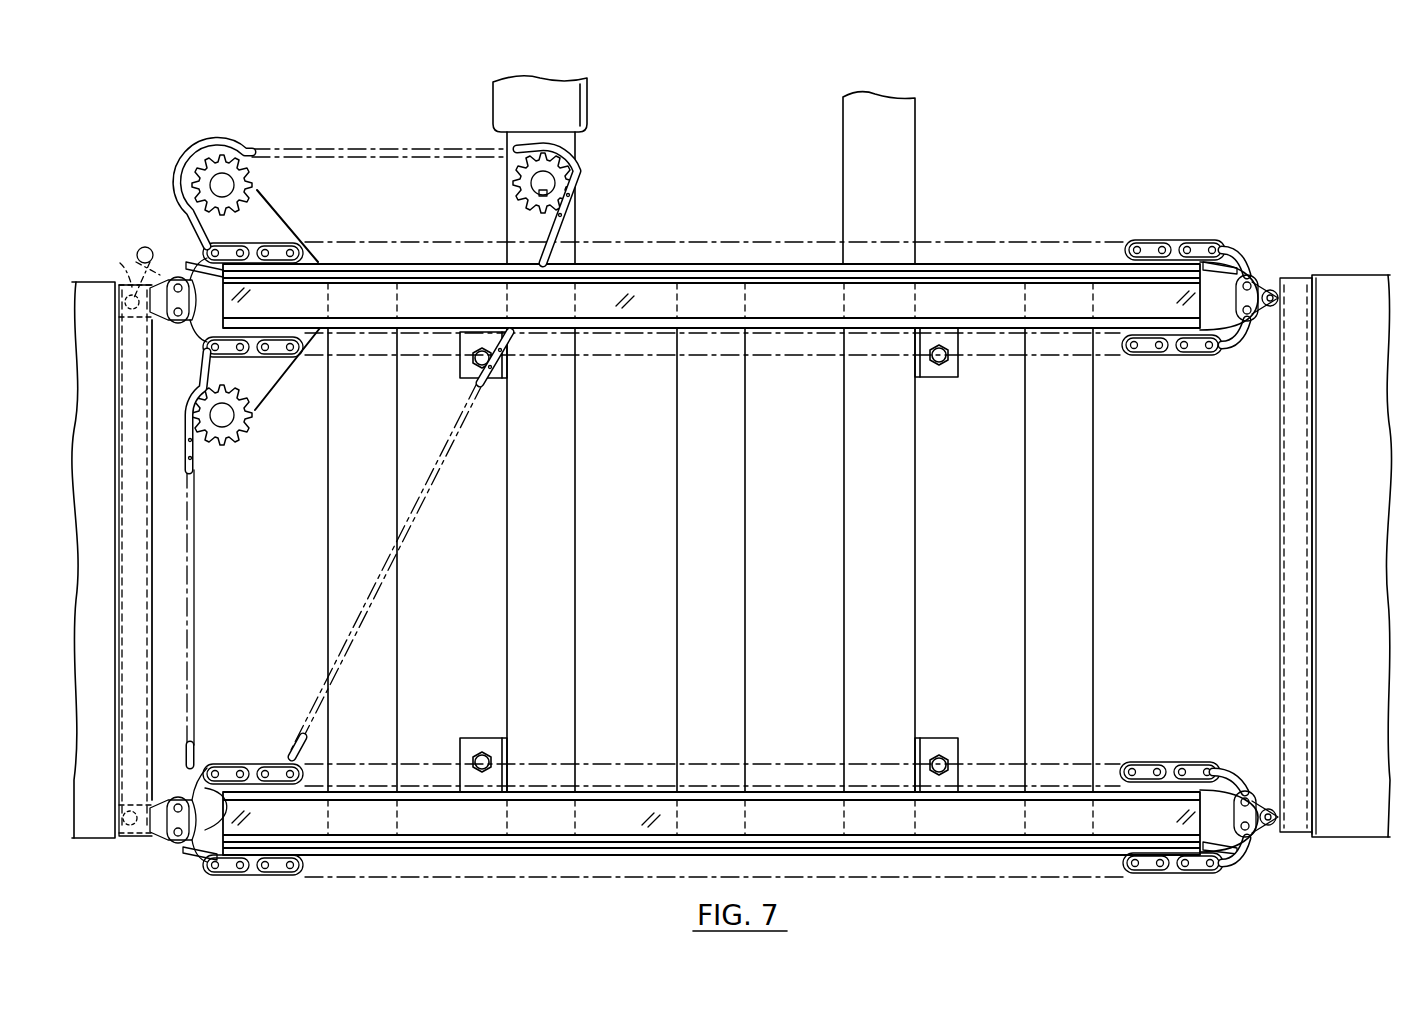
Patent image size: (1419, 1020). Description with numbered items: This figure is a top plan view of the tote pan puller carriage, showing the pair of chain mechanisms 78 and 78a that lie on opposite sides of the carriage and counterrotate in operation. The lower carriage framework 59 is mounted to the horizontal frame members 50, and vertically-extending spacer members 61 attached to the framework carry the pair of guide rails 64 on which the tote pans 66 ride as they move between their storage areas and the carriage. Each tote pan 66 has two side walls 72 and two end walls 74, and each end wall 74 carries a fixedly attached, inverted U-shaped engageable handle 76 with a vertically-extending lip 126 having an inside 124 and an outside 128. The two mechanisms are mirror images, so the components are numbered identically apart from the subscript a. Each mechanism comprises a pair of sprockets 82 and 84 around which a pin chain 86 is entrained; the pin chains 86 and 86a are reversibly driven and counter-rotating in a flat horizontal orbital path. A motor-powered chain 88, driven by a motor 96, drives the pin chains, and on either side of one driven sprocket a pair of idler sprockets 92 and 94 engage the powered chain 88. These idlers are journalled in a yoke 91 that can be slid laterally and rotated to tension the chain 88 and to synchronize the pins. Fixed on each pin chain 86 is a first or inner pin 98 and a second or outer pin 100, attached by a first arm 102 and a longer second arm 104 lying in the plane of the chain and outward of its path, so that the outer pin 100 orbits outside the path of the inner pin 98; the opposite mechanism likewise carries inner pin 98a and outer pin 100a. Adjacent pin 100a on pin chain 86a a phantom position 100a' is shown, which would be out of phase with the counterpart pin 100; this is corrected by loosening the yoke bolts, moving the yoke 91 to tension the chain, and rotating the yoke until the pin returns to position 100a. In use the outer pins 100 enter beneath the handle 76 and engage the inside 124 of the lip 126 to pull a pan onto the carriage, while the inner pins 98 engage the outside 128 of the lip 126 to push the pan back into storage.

The horizontal frame members 50 is at (580, 578).
The lower carriage framework 59 is at (1096, 653).
The spacer members 61 is at (403, 303).
The guide rails 64 is at (677, 261).
The tote pans 66 is at (152, 542).
The side walls 72 is at (93, 842).
The end walls 74 is at (118, 666).
The engageable handle 76 is at (153, 569).
The chain mechanism 78 is at (1150, 760).
The chain mechanism 78a is at (1142, 239).
The sprocket 82 is at (214, 798).
The sprocket 84 is at (1225, 290).
The pin chain 86 is at (1170, 876).
The pin chain 86a is at (1152, 354).
The motor-powered chain 88 is at (573, 230).
The yoke 91 is at (283, 220).
The idler sprocket 92 is at (257, 185).
The idler sprocket 94 is at (233, 445).
The motor 96 is at (580, 104).
The first or inner pin 98 is at (1262, 830).
The first or inner pin 98a is at (1274, 288).
The second or outer pin 100 is at (133, 828).
The second or outer pin 100a is at (117, 282).
The phantom pin position 100a' is at (146, 243).
The first arm 102 is at (1262, 312).
The second arm 104 is at (180, 326).
The inside of lip 124 is at (147, 590).
The lip 126 is at (153, 530).
The outside of lip 128 is at (153, 503).